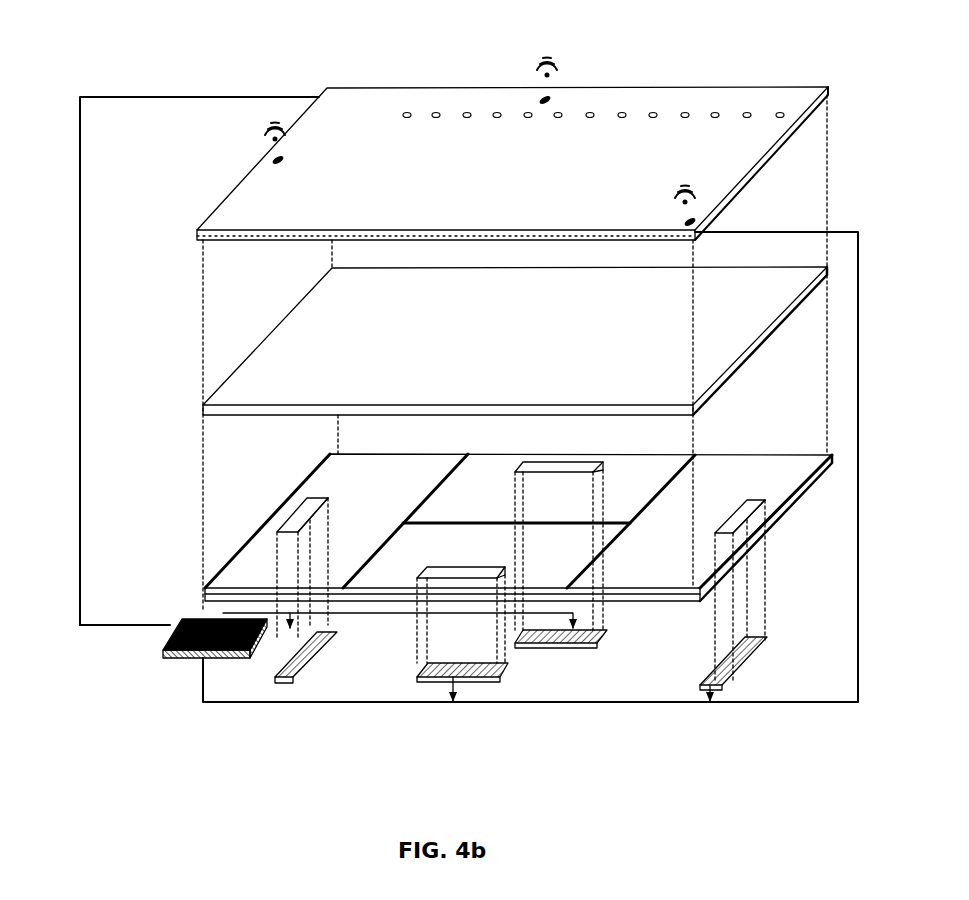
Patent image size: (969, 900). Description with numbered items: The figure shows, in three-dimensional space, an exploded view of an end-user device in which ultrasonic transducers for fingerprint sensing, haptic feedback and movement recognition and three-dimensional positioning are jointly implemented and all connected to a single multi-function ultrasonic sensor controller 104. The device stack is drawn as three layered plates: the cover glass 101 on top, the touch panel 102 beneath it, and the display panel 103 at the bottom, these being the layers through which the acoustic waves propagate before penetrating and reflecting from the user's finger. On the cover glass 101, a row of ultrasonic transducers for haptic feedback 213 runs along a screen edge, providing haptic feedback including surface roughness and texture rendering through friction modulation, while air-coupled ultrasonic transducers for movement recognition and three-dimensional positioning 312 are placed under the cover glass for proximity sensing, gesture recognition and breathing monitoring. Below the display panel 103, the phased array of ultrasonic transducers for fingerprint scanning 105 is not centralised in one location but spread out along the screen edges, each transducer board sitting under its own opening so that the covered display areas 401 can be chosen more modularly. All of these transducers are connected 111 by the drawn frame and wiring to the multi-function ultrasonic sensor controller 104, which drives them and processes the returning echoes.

The cover glass 101 is at (220, 197).
The touch panel 102 is at (222, 382).
The display panel 103 is at (225, 562).
The multi-function ultrasonic sensor controller 104 is at (153, 648).
The ultrasonic transducers for fingerprint sensing 105 is at (300, 648).
The connection 111 is at (90, 410).
The ultrasonic transducers for haptic feedback 213 is at (650, 110).
The ultrasonic transducers for movement recognition/3D positioning 312 is at (543, 99).
The covered display areas 401 is at (318, 470).